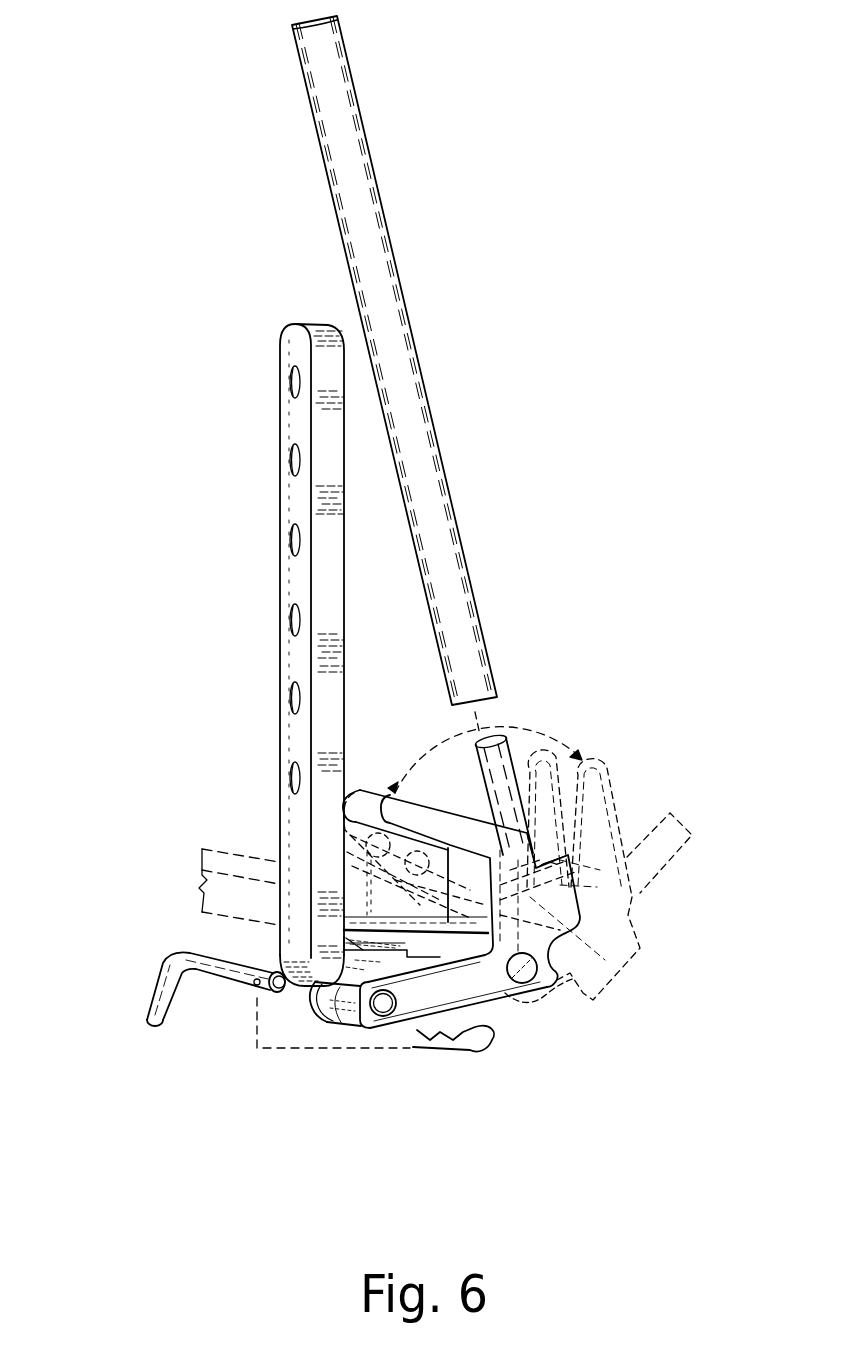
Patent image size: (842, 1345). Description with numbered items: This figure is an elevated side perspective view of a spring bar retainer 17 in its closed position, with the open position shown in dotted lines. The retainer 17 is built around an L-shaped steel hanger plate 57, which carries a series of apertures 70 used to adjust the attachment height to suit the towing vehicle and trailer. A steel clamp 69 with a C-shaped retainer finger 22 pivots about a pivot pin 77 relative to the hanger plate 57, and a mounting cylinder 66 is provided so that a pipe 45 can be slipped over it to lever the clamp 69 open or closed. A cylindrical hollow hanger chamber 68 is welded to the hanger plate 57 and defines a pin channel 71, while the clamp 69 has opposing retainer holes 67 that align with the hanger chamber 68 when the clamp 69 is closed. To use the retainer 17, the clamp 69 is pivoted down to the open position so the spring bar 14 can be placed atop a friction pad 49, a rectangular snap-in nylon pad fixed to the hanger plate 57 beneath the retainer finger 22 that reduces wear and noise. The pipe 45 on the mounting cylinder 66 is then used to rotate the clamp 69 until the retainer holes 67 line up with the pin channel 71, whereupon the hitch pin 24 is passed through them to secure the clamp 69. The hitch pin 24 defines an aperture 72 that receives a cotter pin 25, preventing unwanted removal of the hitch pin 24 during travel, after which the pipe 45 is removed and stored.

The spring bar 14 is at (253, 863).
The retainer 17 is at (608, 1004).
The C-shaped retainer finger 22 is at (446, 822).
The hitch pin 24 is at (152, 983).
The cotter pin 25 is at (440, 1052).
The pipe 45 is at (402, 322).
The friction pad 49 is at (372, 928).
The L-shaped hanger plate 57 is at (286, 333).
The mounting cylinder 66 is at (505, 746).
The retainer holes 67 is at (398, 1000).
The hanger chamber 68 is at (336, 1003).
The clamp 69 is at (563, 897).
The apertures 70 is at (296, 683).
The pin channel 71 is at (382, 1008).
The aperture 72 is at (255, 984).
The pivot pin 77 is at (520, 970).